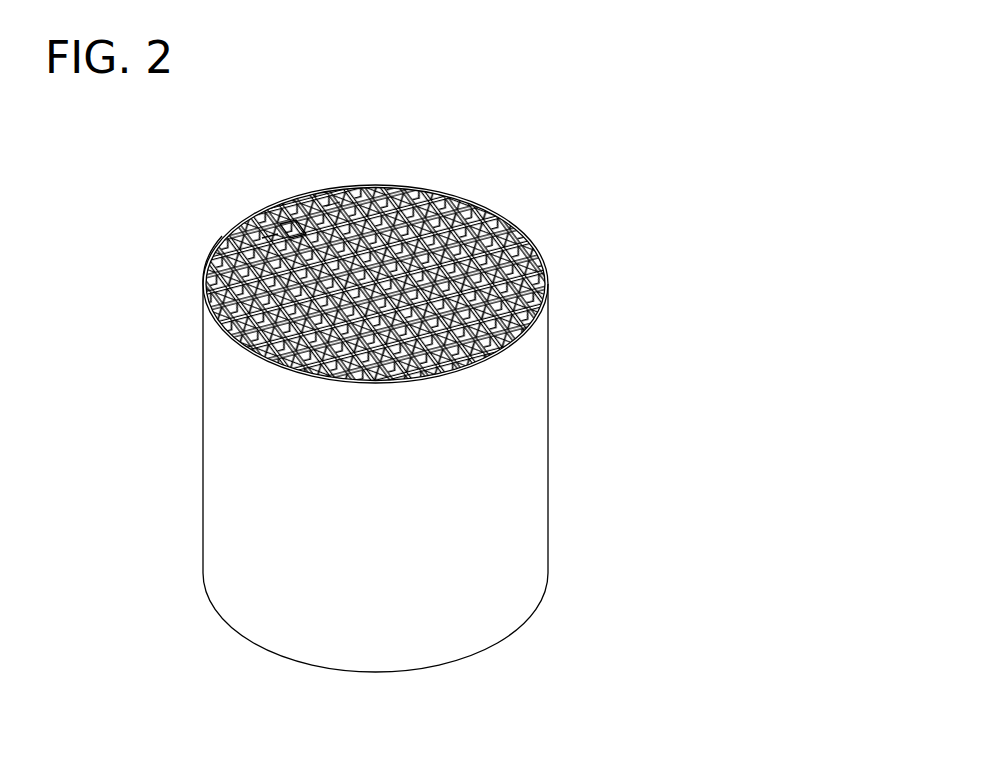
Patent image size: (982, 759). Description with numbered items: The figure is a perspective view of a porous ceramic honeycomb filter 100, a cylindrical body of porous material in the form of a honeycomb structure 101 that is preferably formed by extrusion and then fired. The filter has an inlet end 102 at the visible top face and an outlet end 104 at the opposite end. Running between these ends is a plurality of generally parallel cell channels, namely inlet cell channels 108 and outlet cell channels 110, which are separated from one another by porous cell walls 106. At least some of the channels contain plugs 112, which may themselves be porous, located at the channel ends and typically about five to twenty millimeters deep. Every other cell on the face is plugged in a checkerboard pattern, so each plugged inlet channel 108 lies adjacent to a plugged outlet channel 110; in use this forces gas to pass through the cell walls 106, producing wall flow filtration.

The porous ceramic honeycomb filter 100 is at (556, 168).
The honeycomb structure 101 is at (215, 274).
The inlet end 102 is at (527, 255).
The outlet end 104 is at (462, 658).
The porous cell walls 106 is at (410, 220).
The inlet cell channels 108 is at (292, 221).
The outlet cell channels 110 is at (270, 236).
The plugs 112 is at (333, 203).